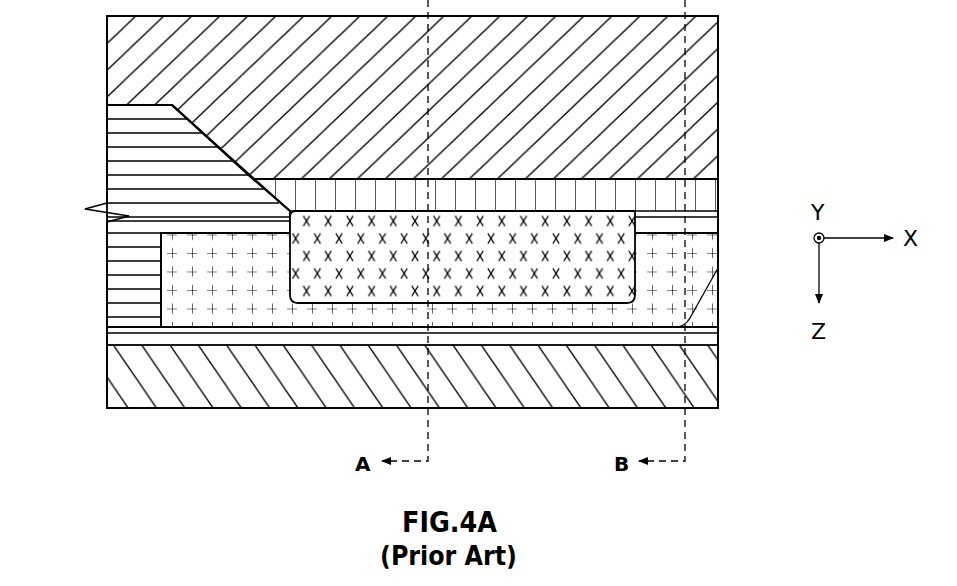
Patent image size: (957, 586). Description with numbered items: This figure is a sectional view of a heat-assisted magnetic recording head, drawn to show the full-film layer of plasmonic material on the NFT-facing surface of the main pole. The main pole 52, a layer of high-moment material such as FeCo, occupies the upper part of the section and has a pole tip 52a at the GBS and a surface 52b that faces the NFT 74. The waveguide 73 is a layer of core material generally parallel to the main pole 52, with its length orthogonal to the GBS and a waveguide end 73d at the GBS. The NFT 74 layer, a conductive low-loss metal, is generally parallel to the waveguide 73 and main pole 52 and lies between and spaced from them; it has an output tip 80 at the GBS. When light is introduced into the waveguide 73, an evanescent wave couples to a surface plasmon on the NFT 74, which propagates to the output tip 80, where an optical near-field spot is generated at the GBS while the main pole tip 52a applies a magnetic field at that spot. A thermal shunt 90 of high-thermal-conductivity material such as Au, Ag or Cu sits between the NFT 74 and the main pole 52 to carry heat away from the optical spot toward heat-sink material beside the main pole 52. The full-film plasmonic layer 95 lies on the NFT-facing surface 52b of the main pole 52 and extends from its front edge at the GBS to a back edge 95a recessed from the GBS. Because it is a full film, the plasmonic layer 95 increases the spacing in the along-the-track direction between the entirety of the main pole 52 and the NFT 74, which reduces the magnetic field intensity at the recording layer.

The main pole 52 is at (658, 92).
The pole tip 52a is at (720, 103).
The NFT-facing surface 52b is at (290, 178).
The gas bearing surface GBS is at (720, 163).
The full-film plasmonic layer 95 is at (703, 193).
The back edge 95a is at (272, 195).
The NFT 74 is at (183, 265).
The output tip 80 is at (695, 287).
The thermal shunt 90 is at (367, 270).
The waveguide 73 is at (550, 378).
The waveguide end 73d is at (720, 370).